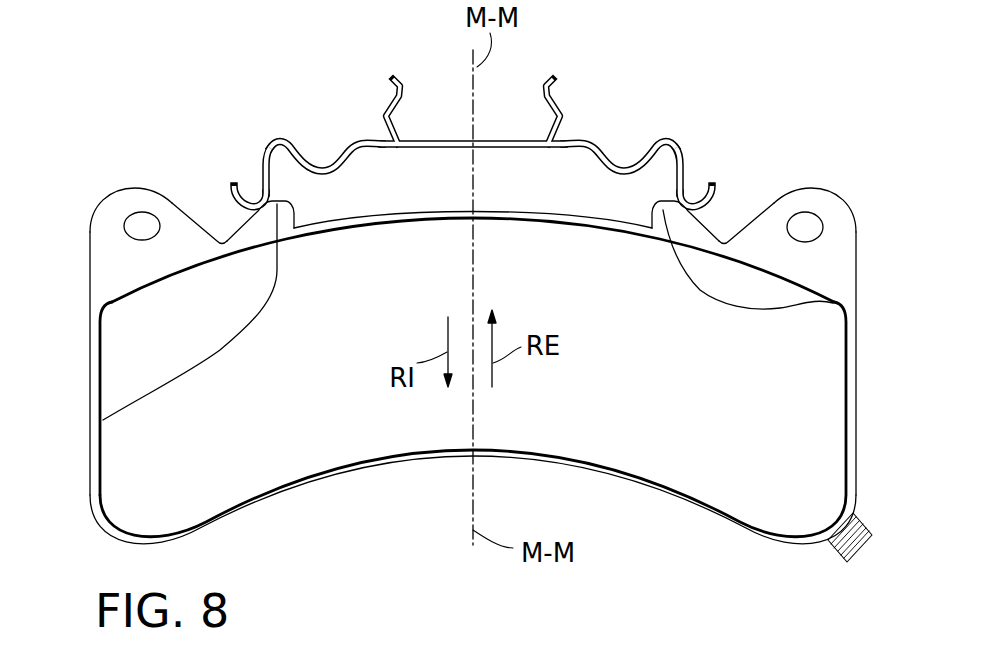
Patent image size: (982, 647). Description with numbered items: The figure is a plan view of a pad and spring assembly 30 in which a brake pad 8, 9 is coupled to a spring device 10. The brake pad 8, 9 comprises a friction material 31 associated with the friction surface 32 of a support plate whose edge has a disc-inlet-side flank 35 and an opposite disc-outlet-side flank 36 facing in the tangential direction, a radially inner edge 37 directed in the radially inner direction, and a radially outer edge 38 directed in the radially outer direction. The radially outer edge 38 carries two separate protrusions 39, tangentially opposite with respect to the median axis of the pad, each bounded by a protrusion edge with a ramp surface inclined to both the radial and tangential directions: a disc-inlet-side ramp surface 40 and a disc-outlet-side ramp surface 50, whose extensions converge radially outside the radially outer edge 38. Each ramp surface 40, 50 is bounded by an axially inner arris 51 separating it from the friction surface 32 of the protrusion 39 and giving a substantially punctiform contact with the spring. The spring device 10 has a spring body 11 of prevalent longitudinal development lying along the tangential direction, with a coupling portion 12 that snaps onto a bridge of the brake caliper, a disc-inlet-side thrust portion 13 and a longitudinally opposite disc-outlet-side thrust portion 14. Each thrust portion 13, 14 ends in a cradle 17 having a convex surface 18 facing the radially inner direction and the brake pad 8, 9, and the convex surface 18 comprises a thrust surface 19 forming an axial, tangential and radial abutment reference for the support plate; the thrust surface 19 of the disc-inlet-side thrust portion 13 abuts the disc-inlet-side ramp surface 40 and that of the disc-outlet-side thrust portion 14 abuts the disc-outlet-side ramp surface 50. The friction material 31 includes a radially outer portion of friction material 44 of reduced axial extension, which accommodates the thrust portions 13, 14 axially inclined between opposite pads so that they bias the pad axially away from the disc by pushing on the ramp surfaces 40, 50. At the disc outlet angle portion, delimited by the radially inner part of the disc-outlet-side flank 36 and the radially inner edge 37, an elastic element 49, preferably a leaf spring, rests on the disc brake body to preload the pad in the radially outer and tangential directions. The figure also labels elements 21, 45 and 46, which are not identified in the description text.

The brake pad 8 is at (98, 306).
The brake pad 9 is at (467, 313).
The spring device 10 is at (485, 113).
The spring body 11 is at (507, 137).
The coupling portion 12 is at (400, 83).
The disc-inlet-side thrust portion 13 is at (253, 190).
The disc-outlet-side thrust portion 14 is at (677, 200).
The cradle 17 is at (250, 202).
The convex surface 18 is at (474, 369).
The thrust surface 19 is at (103, 420).
The spring wave portions 21 is at (334, 153).
The pad and spring assembly 30 is at (467, 315).
The friction material 31 is at (431, 366).
The friction surface 32 is at (467, 313).
The disc-inlet-side flank 35 is at (90, 470).
The disc-outlet-side flank 36 is at (858, 397).
The radially inner edge 37 is at (410, 460).
The radially outer edge 38 is at (428, 213).
The protrusion 39 is at (280, 212).
The disc-inlet-side ramp surface 40 is at (243, 227).
The radially outer portion of friction material 44 is at (378, 243).
The retaining lugs 45 is at (469, 163).
The lug holes 46 is at (137, 229).
The elastic element 49 is at (850, 545).
The disc-outlet-side ramp surface 50 is at (697, 228).
The axially inner arris 51 is at (243, 231).